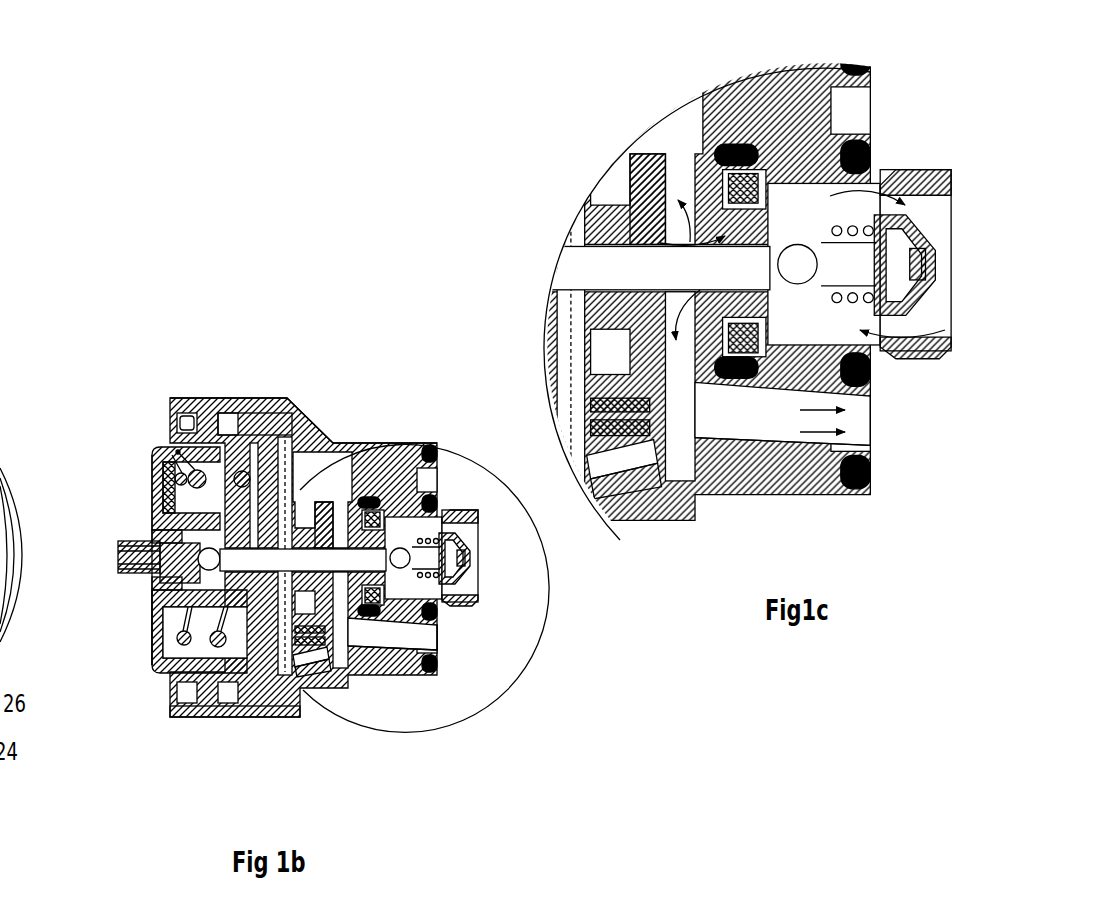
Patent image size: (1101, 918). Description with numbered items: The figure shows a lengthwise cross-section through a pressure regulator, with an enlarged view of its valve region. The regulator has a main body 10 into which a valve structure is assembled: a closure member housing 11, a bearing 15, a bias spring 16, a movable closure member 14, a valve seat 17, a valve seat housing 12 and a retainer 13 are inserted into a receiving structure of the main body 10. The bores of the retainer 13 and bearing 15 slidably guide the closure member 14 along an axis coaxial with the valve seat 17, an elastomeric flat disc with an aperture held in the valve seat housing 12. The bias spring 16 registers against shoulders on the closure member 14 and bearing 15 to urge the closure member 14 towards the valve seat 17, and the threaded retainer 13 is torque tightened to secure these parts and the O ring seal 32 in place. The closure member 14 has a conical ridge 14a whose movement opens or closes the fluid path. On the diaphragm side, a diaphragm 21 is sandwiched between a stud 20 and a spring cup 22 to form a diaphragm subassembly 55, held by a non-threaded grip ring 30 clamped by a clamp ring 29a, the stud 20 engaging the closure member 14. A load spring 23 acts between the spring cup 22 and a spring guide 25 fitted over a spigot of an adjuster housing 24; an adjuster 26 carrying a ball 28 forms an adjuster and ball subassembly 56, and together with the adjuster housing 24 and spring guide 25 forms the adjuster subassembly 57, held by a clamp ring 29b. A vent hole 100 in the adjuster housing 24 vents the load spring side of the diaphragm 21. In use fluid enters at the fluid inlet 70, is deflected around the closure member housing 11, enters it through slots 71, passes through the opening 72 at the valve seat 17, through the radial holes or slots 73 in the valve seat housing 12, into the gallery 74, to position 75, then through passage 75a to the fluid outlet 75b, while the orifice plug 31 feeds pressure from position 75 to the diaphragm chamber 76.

In FIG. 1B, the main body 10 is at (313, 425).
In FIG. 1C, the main body 10 is at (782, 105).
In FIG. 1B, the closure member housing 11 is at (474, 543).
In FIG. 1C, the closure member housing 11 is at (935, 285).
In FIG. 1B, the valve seat housing 12 is at (355, 488).
In FIG. 1C, the valve seat housing 12 is at (698, 148).
In FIG. 1B, the retainer 13 is at (318, 490).
In FIG. 1C, the retainer 13 is at (627, 151).
In FIG. 1B, the closure member 14 is at (428, 535).
In FIG. 1C, the closure member 14 is at (892, 262).
In FIG. 1B, the ridge 14a is at (460, 558).
In FIG. 1C, the ridge 14a is at (948, 173).
In FIG. 1B, the bearing 15 is at (452, 540).
In FIG. 1C, the bearing 15 is at (900, 303).
In FIG. 1B, the bias spring 16 is at (420, 545).
In FIG. 1C, the bias spring 16 is at (868, 292).
In FIG. 1B, the valve seat 17 is at (435, 668).
In FIG. 1C, the valve seat 17 is at (866, 160).
In FIG. 1B, the stud 20 is at (288, 400).
In FIG. 1C, the stud 20 is at (571, 260).
In FIG. 1B, the diaphragm 21 is at (250, 400).
In FIG. 1B, the spring cup 22 is at (218, 400).
In FIG. 1B, the load spring 23 is at (168, 450).
In FIG. 1B, the adjuster housing 24 is at (150, 468).
In FIG. 1B, the spring guide 25 is at (163, 508).
In FIG. 1B, the adjuster 26 is at (130, 592).
In FIG. 1B, the ball 28 is at (152, 637).
In FIG. 1B, the clamp ring 29a is at (217, 720).
In FIG. 1B, the clamp ring 29b is at (177, 720).
In FIG. 1B, the grip ring 30 is at (260, 720).
In FIG. 1B, the orifice plug 31 is at (308, 660).
In FIG. 1C, the orifice plug 31 is at (630, 473).
In FIG. 1B, the O ring seal 32 is at (377, 487).
In FIG. 1C, the O ring seal 32 is at (745, 152).
In FIG. 1B, the diaphragm subassembly 55 is at (188, 335).
In FIG. 1B, the adjuster and ball subassembly 56 is at (103, 597).
In FIG. 1B, the adjuster subassembly 57 is at (78, 452).
In FIG. 1B, the fluid inlet 70 is at (476, 565).
In FIG. 1C, the fluid inlet 70 is at (945, 268).
In FIG. 1C, the slots 71 is at (868, 395).
In FIG. 1C, the opening 72 is at (728, 203).
In FIG. 1B, the radial holes or slots 73 is at (303, 560).
In FIG. 1C, the radial holes or slots 73 is at (660, 300).
In FIG. 1B, the gallery 74 is at (340, 622).
In FIG. 1C, the gallery 74 is at (673, 393).
In FIG. 1B, the position 75 is at (340, 650).
In FIG. 1C, the position 75 is at (677, 440).
In FIG. 1B, the passage 75a is at (375, 643).
In FIG. 1C, the passage 75a is at (748, 420).
In FIG. 1B, the fluid outlet 75b is at (428, 637).
In FIG. 1C, the fluid outlet 75b is at (857, 418).
In FIG. 1B, the diaphragm chamber 76 is at (313, 690).
In FIG. 1C, the diaphragm chamber 76 is at (587, 480).
In FIG. 1B, the vent hole 100 is at (178, 456).